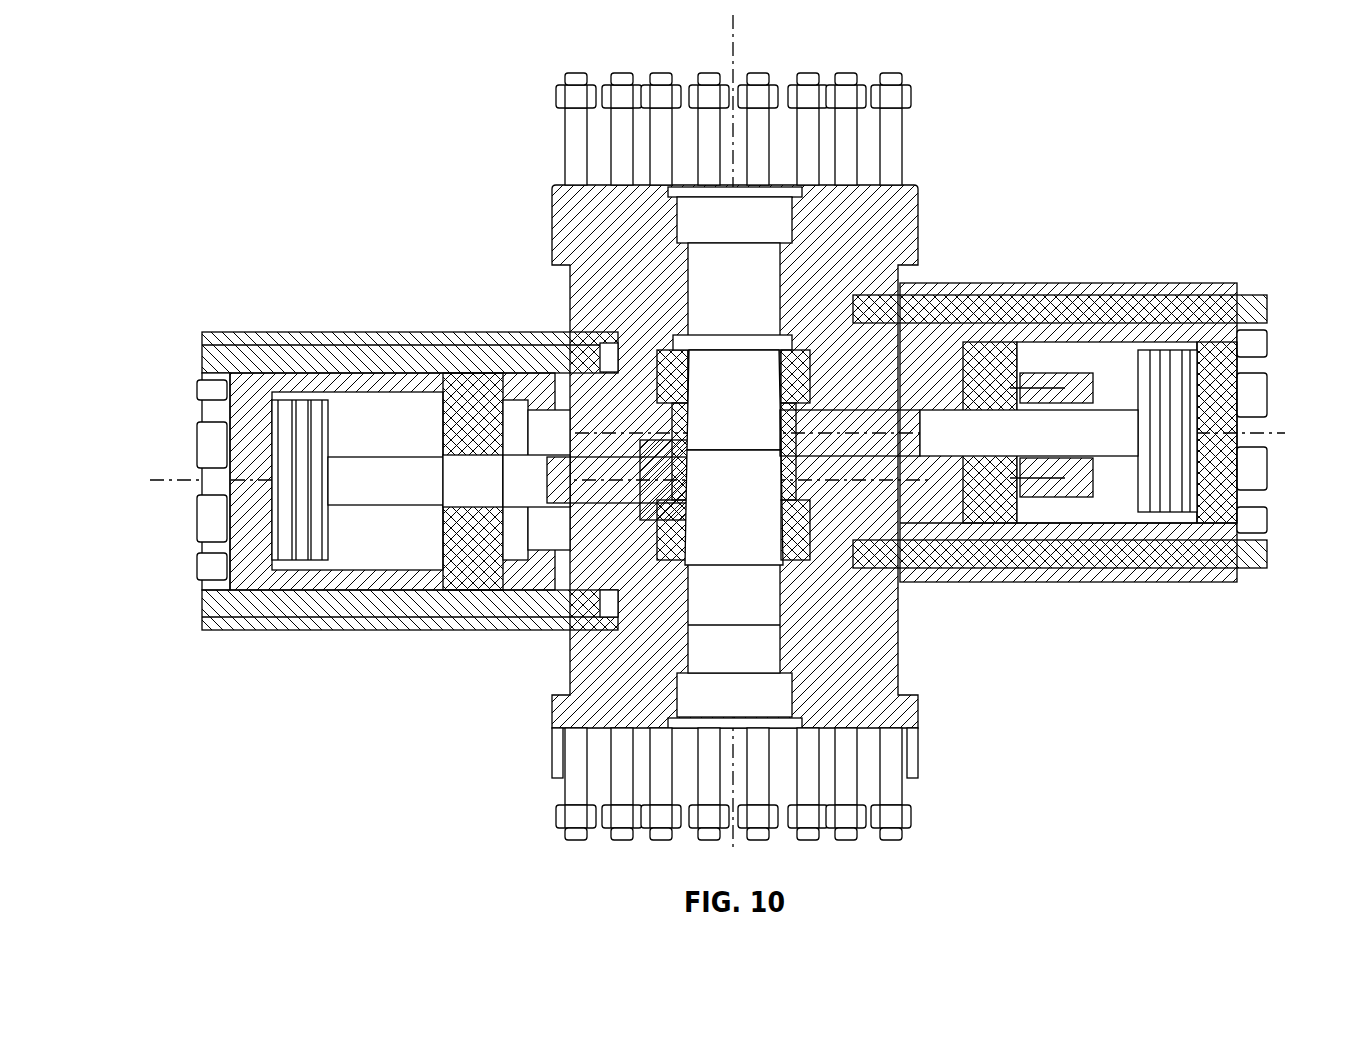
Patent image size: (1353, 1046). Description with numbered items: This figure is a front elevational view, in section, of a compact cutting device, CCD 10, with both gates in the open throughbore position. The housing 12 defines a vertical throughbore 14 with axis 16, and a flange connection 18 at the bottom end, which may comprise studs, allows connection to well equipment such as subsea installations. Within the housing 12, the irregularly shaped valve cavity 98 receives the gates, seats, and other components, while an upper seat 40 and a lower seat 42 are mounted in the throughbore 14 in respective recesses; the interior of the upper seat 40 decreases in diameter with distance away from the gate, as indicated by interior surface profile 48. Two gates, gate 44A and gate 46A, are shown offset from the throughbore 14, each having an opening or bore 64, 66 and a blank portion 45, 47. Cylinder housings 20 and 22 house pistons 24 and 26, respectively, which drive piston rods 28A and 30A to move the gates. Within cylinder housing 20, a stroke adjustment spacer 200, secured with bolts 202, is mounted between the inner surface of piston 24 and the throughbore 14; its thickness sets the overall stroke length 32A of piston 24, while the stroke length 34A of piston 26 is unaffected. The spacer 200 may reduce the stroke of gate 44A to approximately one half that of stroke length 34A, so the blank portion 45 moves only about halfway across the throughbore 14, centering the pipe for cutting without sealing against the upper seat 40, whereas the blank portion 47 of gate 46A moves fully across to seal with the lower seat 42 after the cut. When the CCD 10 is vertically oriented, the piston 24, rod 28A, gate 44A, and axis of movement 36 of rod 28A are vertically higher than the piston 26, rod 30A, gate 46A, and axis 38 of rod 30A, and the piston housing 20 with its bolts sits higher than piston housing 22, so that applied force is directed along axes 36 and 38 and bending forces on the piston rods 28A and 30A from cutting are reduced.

The compact cutting device 10 is at (335, 44).
The housing 12 is at (915, 216).
The throughbore 14 is at (692, 274).
The axis 16 is at (735, 616).
The flange connection 18 is at (900, 712).
The cylinder housing 20 is at (1228, 330).
The cylinder housing 22 is at (232, 380).
The piston 24 is at (1255, 400).
The piston 26 is at (300, 492).
The piston rod 28A is at (1135, 432).
The piston rod 30A is at (380, 457).
The stroke length 32A is at (1138, 290).
The stroke length 34A is at (440, 633).
The axis of movement 36 is at (955, 545).
The axis 38 is at (452, 480).
The upper seat 40 is at (684, 358).
The lower seat 42 is at (798, 558).
The gate 44A is at (812, 436).
The blank portion 45 is at (952, 330).
The gate 46A is at (592, 500).
The blank portion 47 is at (548, 600).
The interior surface profile 48 is at (682, 470).
The bore 64 is at (725, 428).
The bore 66 is at (771, 510).
The valve cavity 98 is at (648, 540).
The stroke adjustment spacer 200 is at (1010, 500).
The bolts 202 is at (1065, 500).